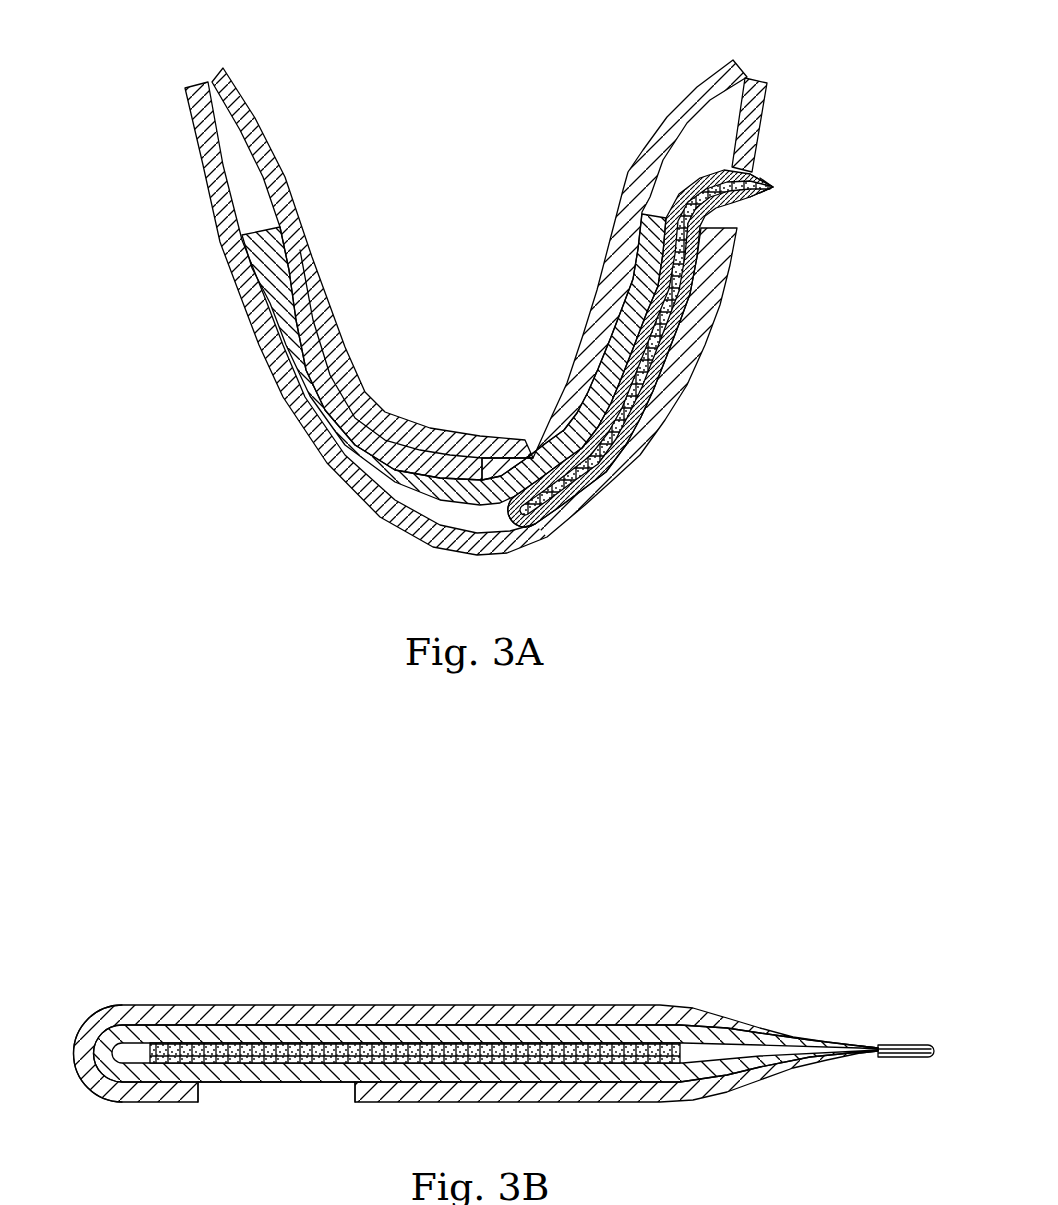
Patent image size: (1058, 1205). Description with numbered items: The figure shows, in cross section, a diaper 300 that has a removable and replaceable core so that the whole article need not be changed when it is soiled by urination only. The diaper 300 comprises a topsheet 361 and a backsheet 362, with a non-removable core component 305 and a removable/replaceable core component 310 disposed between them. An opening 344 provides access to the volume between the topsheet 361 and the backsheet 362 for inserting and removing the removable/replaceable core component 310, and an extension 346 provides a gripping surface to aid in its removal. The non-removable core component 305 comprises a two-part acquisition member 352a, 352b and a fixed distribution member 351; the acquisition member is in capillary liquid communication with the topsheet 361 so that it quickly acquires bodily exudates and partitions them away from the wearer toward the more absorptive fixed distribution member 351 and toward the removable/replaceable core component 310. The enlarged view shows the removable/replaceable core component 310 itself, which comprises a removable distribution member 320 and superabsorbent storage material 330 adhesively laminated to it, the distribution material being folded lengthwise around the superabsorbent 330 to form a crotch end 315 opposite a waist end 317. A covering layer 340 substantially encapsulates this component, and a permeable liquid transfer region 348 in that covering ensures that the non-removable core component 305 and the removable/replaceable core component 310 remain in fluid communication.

In FIG. 3A, the diaper 300 is at (499, 313).
In FIG. 3A, the non-removable core component 305 is at (434, 307).
In FIG. 3A, the removable/replaceable core component 310 is at (667, 384).
In FIG. 3B, the removable/replaceable core component 310 is at (494, 1029).
In FIG. 3A, the crotch end 315 is at (512, 508).
In FIG. 3B, the crotch end 315 is at (82, 1032).
In FIG. 3A, the waist end 317 is at (733, 200).
In FIG. 3B, the waist end 317 is at (848, 1040).
In FIG. 3B, the removable distribution member 320 is at (305, 1035).
In FIG. 3B, the superabsorbent storage material 330 is at (440, 1050).
In FIG. 3B, the covering layer 340 is at (174, 1013).
In FIG. 3A, the opening 344 is at (762, 203).
In FIG. 3A, the extension 346 is at (770, 186).
In FIG. 3B, the extension 346 is at (903, 1057).
In FIG. 3B, the permeable liquid transfer region 348 is at (269, 1112).
In FIG. 3A, the fixed distribution member 351 is at (330, 413).
In FIG. 3A, the acquisition member first part 352a is at (347, 347).
In FIG. 3A, the acquisition member second part 352b is at (587, 330).
In FIG. 3A, the topsheet 361 is at (273, 175).
In FIG. 3A, the backsheet 362 is at (255, 314).